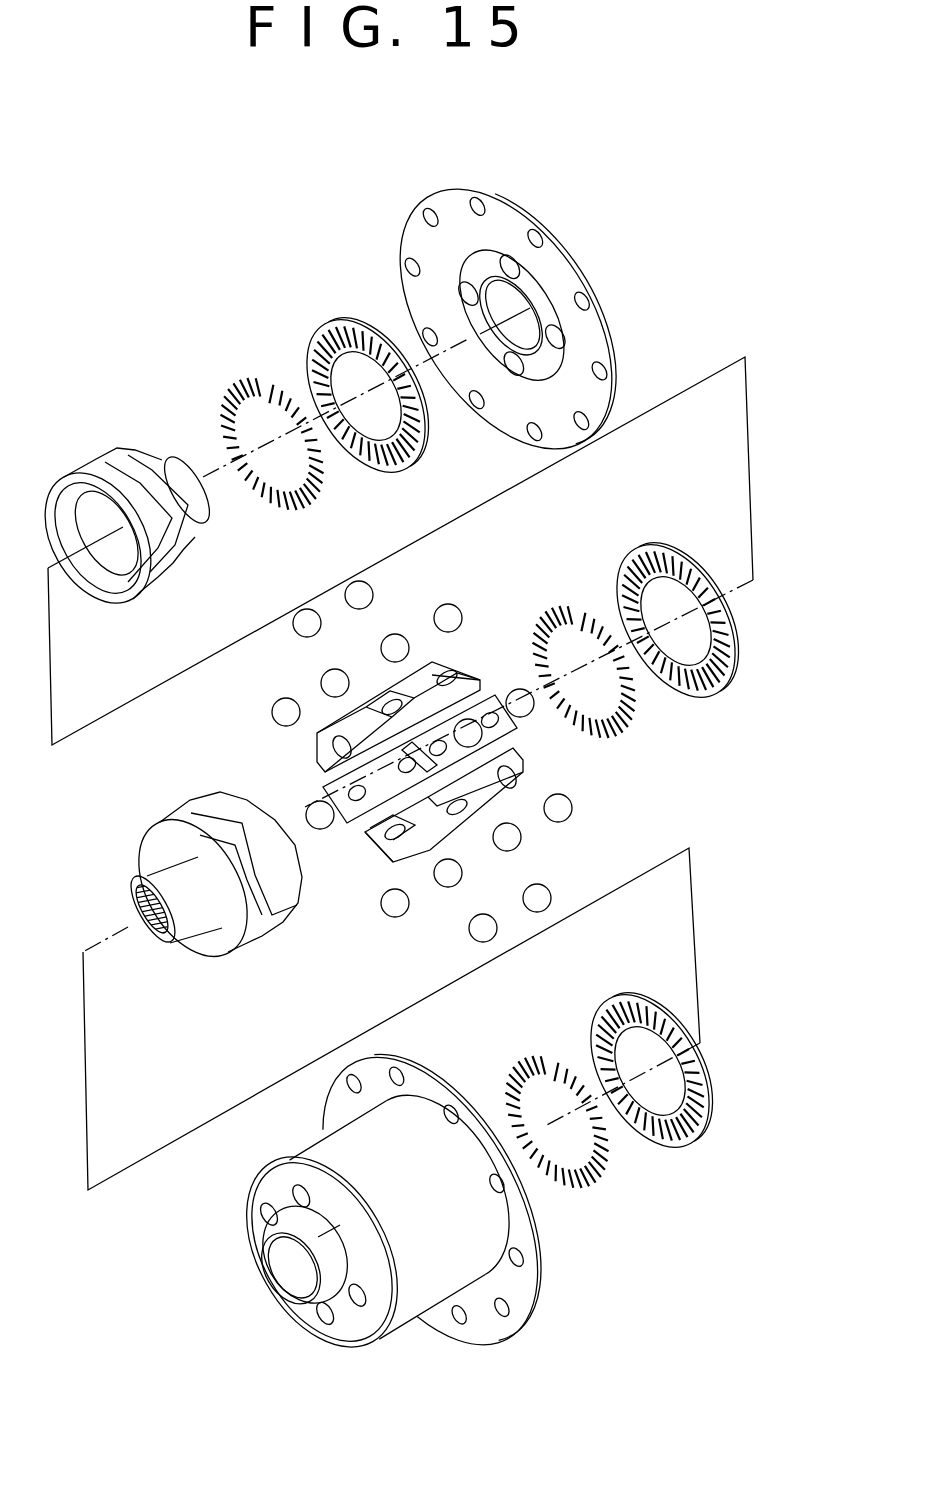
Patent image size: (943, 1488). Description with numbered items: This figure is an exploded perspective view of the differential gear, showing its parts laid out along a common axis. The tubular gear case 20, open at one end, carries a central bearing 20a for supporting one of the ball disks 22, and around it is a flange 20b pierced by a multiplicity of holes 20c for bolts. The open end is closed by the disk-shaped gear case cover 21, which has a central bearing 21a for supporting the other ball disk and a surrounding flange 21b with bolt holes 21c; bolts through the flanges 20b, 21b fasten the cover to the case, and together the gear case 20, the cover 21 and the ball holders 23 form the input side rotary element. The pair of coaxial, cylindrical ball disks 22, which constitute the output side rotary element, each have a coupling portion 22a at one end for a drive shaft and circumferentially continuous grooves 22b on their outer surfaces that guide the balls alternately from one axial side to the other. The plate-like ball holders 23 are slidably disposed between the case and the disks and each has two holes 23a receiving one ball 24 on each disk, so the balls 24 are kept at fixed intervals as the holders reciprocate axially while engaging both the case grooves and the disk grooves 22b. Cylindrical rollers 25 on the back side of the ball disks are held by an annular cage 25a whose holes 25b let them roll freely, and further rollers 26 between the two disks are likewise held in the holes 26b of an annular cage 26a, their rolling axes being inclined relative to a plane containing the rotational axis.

The gear case 20 is at (394, 1224).
The bearing 20a is at (280, 1257).
The flange 20b is at (439, 1196).
The holes 20c is at (443, 1187).
The gear case cover 21 is at (480, 317).
The bearing 21a is at (511, 316).
The flange 21b is at (512, 315).
The holes 21c is at (506, 318).
The ball disks 22 is at (162, 703).
The coupling portion 22a is at (138, 522).
The grooves 22b is at (150, 445).
The ball holders 23 is at (482, 716).
The holes 23a is at (470, 662).
The balls 24 is at (390, 912).
The rollers 25 is at (225, 395).
The cage 25a is at (487, 750).
The holes 25b is at (318, 330).
The rollers 26 is at (622, 735).
The cage 26a is at (679, 619).
The holes 26b is at (658, 548).